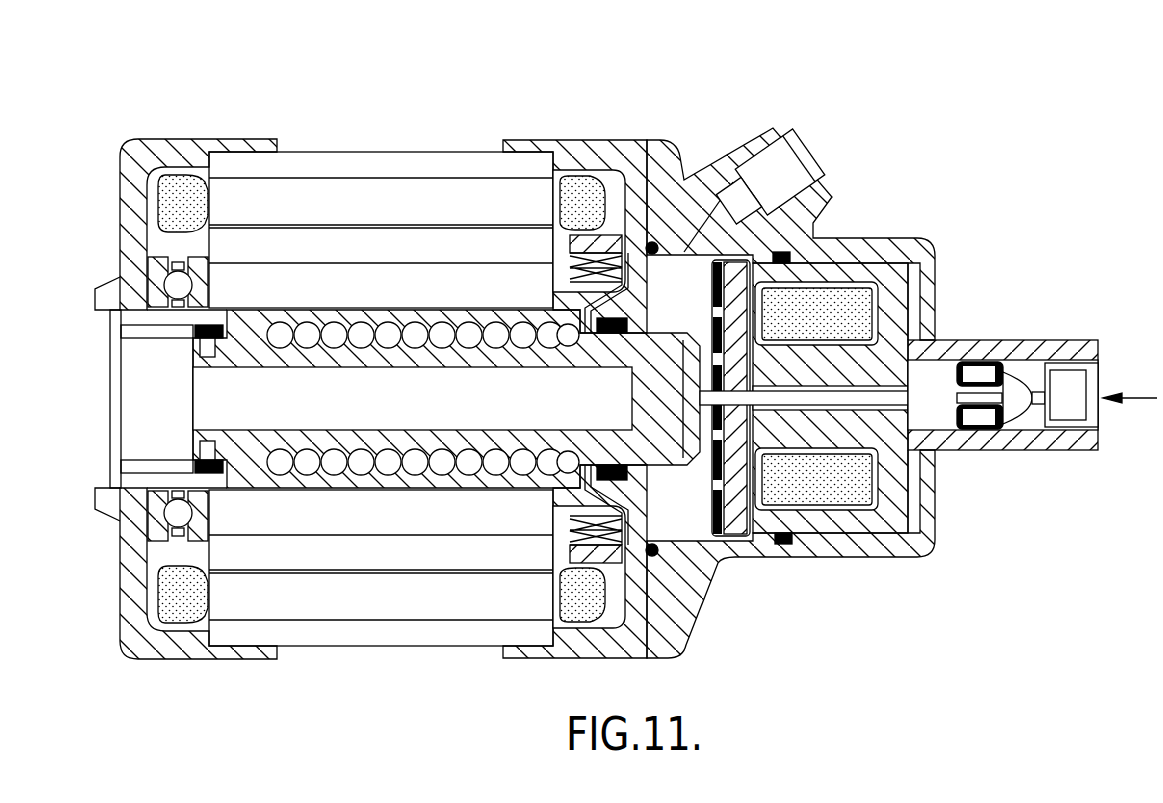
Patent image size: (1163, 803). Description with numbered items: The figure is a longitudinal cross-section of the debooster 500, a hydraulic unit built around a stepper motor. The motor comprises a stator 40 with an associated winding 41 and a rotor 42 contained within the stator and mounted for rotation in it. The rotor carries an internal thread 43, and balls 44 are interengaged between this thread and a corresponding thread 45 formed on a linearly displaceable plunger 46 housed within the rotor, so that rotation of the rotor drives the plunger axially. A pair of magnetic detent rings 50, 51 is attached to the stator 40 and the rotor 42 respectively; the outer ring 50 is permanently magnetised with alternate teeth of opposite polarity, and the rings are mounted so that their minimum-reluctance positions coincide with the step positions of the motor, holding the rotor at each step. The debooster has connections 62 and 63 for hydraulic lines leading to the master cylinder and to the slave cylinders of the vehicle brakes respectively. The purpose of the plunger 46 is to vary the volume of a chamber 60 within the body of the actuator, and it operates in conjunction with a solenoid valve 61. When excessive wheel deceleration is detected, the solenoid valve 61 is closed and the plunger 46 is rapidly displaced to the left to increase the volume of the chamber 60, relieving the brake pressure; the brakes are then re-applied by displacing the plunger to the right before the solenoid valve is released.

The debooster 500 is at (667, 99).
The stator 40 is at (398, 192).
The winding 41 is at (186, 186).
The rotor 42 is at (296, 243).
The internal thread 43 is at (260, 327).
The balls 44 is at (453, 463).
The thread 45 is at (553, 322).
The plunger 46 is at (400, 357).
The magnetic detent ring 50 is at (601, 247).
The magnetic detent ring 51 is at (553, 277).
The chamber 60 is at (692, 517).
The solenoid valve 61 is at (955, 325).
The connection 62 is at (1065, 407).
The connection 63 is at (866, 115).